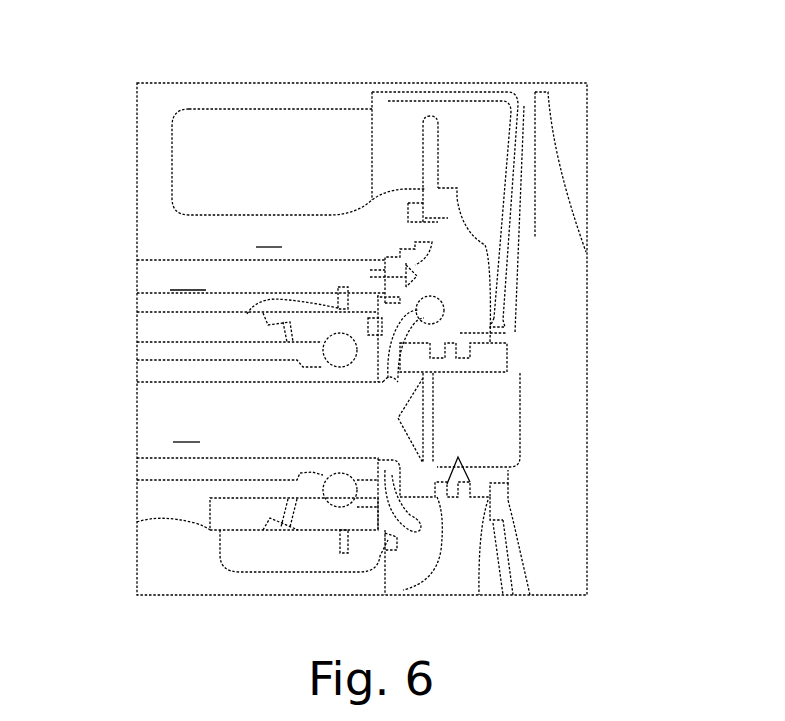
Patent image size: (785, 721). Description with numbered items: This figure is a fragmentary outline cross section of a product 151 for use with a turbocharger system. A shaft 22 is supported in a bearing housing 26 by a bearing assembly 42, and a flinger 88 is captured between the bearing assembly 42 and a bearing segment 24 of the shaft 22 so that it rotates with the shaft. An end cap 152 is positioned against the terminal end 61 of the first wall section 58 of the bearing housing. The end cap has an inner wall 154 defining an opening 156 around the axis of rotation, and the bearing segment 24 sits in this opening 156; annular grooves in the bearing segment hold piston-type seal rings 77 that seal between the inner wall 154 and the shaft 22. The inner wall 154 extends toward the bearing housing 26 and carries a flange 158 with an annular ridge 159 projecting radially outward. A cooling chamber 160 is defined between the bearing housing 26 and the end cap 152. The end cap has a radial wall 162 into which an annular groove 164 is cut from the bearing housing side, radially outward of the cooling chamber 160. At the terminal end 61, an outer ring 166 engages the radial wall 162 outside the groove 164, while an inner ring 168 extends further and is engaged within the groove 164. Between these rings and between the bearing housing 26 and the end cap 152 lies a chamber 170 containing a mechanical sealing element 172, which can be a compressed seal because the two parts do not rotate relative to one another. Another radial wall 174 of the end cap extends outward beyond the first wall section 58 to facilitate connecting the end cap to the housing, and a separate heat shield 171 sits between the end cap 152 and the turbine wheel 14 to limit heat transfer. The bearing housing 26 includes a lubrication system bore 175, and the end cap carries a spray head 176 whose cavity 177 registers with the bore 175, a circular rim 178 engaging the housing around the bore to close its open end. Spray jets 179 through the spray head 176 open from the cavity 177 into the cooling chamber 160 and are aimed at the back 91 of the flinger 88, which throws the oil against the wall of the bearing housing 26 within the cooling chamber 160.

The turbine wheel 14 is at (560, 549).
The shaft 22 is at (262, 495).
The bearing segment 24 is at (413, 437).
The bearing housing 26 is at (152, 212).
The bearing assembly 42 is at (145, 377).
The first wall section 58 is at (298, 178).
The terminal end 61 is at (458, 252).
The piston-type seal rings 77 is at (454, 465).
The flinger 88 is at (405, 338).
The back 91 is at (412, 310).
The product 151 is at (648, 370).
The end cap 152 is at (512, 250).
The inner wall 154 is at (513, 339).
The opening 156 is at (483, 343).
The flange 158 is at (418, 330).
The annular ridge 159 is at (445, 320).
The cooling chamber 160 is at (446, 308).
The radial wall 162 is at (500, 261).
The groove 164 is at (448, 228).
The outer ring 166 is at (440, 196).
The inner ring 168 is at (392, 265).
The chamber 170 is at (452, 203).
The heat shield 171 is at (443, 222).
The mechanical sealing element 172 is at (398, 206).
The radial wall 174 is at (435, 130).
The lubrication system bore 175 is at (261, 284).
The spray head 176 is at (398, 226).
The cavity 177 is at (388, 275).
The circular rim 178 is at (386, 268).
The spray jets 179 is at (250, 312).